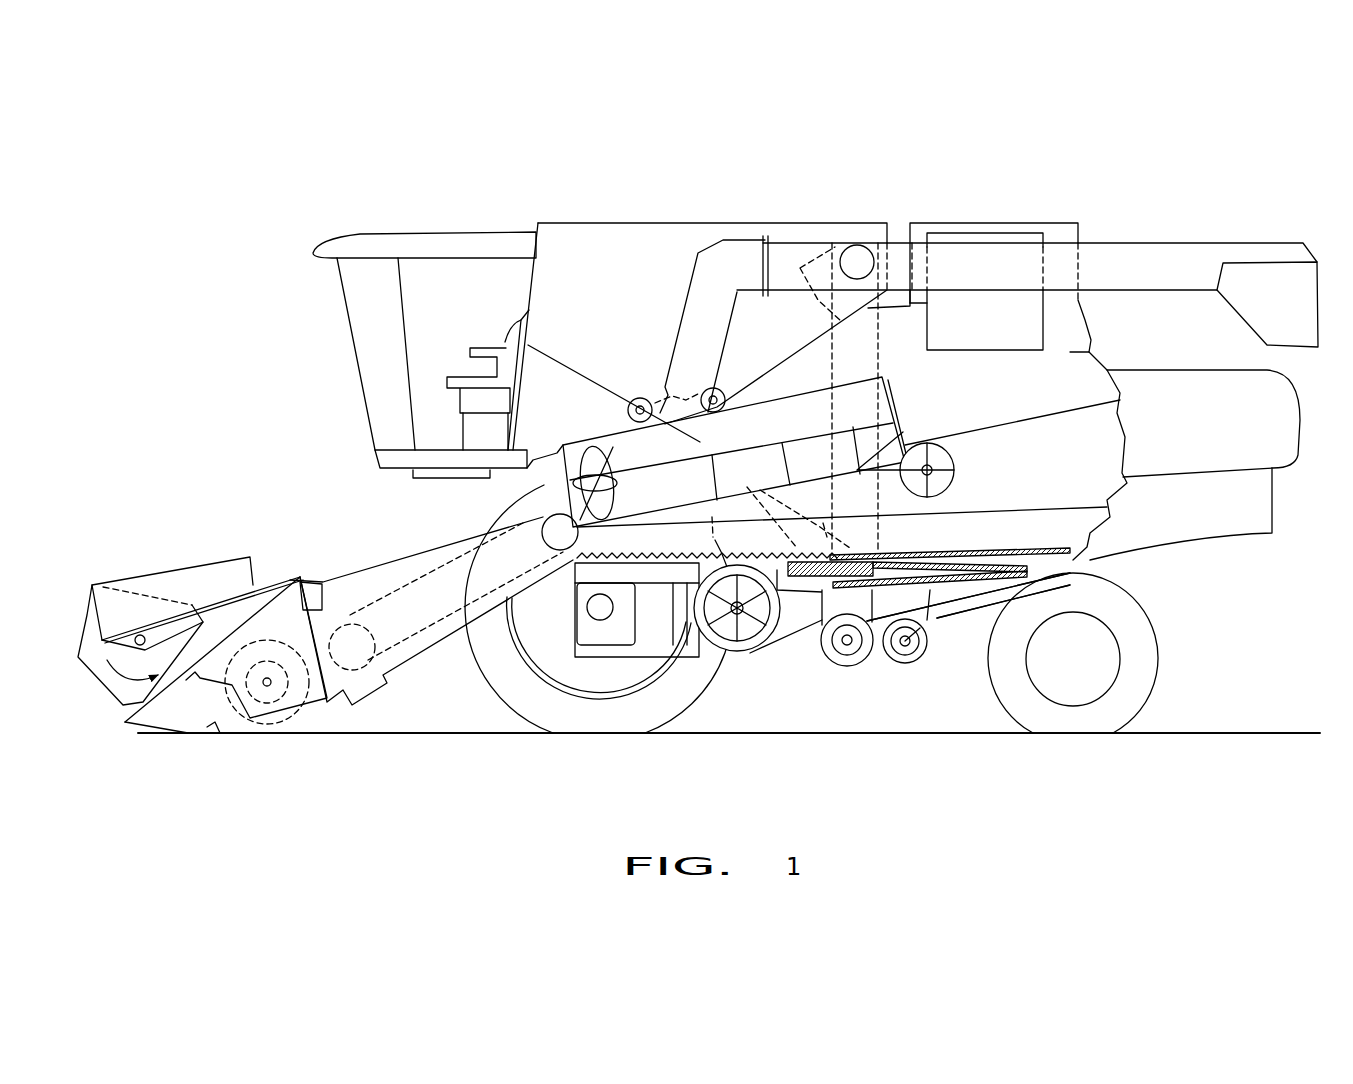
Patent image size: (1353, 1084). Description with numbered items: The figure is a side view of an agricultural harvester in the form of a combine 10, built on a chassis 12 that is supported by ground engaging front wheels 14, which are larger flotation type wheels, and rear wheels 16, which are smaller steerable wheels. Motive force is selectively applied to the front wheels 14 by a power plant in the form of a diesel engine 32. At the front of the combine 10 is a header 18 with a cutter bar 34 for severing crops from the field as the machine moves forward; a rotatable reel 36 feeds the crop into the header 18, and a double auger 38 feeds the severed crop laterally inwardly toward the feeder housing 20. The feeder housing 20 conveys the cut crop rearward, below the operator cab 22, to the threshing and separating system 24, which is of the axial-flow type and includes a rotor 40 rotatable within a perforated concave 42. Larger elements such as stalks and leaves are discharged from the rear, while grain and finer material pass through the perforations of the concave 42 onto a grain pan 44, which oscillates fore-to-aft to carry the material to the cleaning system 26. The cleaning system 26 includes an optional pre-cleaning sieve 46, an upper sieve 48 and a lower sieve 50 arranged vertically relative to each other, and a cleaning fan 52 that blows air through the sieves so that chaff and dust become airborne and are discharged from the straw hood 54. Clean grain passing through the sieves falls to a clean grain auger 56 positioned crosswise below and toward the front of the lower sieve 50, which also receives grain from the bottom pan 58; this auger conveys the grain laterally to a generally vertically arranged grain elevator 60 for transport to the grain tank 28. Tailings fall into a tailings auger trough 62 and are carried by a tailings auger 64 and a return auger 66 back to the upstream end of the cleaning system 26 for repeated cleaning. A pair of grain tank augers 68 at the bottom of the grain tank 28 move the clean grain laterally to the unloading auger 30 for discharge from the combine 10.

The combine 10 is at (420, 212).
The chassis 12 is at (1090, 567).
The front wheels 14 is at (502, 692).
The rear wheels 16 is at (1160, 680).
The header 18 is at (178, 556).
The feeder housing 20 is at (390, 562).
The operator cab 22 is at (351, 330).
The threshing and separating system 24 is at (503, 496).
The cleaning system 26 is at (803, 665).
The grain tank 28 is at (590, 230).
The unloading auger 30 is at (1168, 253).
The diesel engine 32 is at (976, 232).
The cutter bar 34 is at (205, 728).
The reel 36 is at (87, 625).
The double auger 38 is at (272, 705).
The rotor 40 is at (578, 448).
The concave 42 is at (777, 430).
The grain pan 44 is at (565, 573).
The pre-cleaning sieve 46 is at (883, 552).
The upper sieve 48 is at (985, 556).
The lower sieve 50 is at (957, 590).
The cleaning fan 52 is at (727, 650).
The straw hood 54 is at (1287, 412).
The clean grain auger 56 is at (848, 668).
The bottom pan 58 is at (1007, 592).
The grain elevator 60 is at (880, 352).
The tailings auger trough 62 is at (985, 596).
The tailings auger 64 is at (900, 668).
The return auger 66 is at (713, 521).
The grain tank augers 68 is at (637, 396).